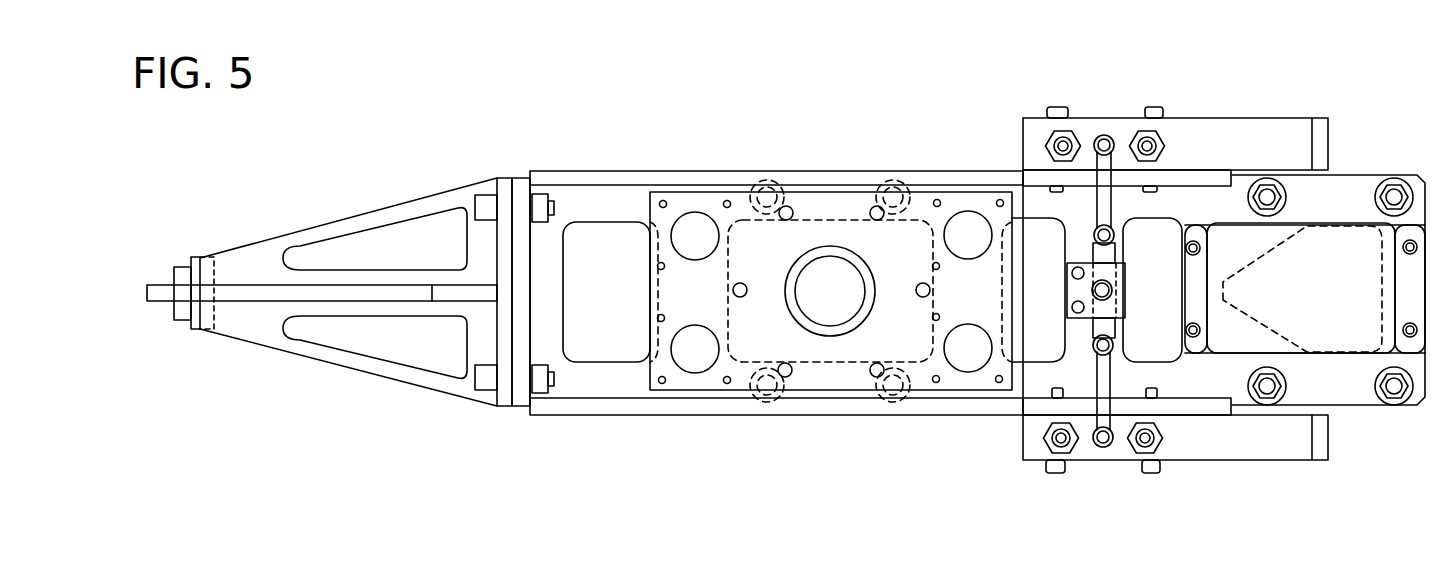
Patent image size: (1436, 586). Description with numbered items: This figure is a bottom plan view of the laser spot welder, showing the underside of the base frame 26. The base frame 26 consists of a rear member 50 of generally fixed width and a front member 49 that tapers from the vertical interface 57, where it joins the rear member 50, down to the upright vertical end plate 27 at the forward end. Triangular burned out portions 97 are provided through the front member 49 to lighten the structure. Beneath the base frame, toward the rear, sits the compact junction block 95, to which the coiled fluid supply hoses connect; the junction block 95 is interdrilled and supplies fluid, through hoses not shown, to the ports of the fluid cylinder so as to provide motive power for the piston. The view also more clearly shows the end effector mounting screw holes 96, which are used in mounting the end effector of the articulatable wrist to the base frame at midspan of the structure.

The base frame 26 is at (767, 288).
The upright vertical end plate 27 is at (215, 312).
The front member 49 is at (365, 281).
The rear member 50 is at (640, 170).
The vertical interface 57 is at (512, 267).
The junction block 95 is at (1125, 292).
The end effector mounting screw holes 96 is at (790, 374).
The triangular burned out portions 97 is at (362, 236).